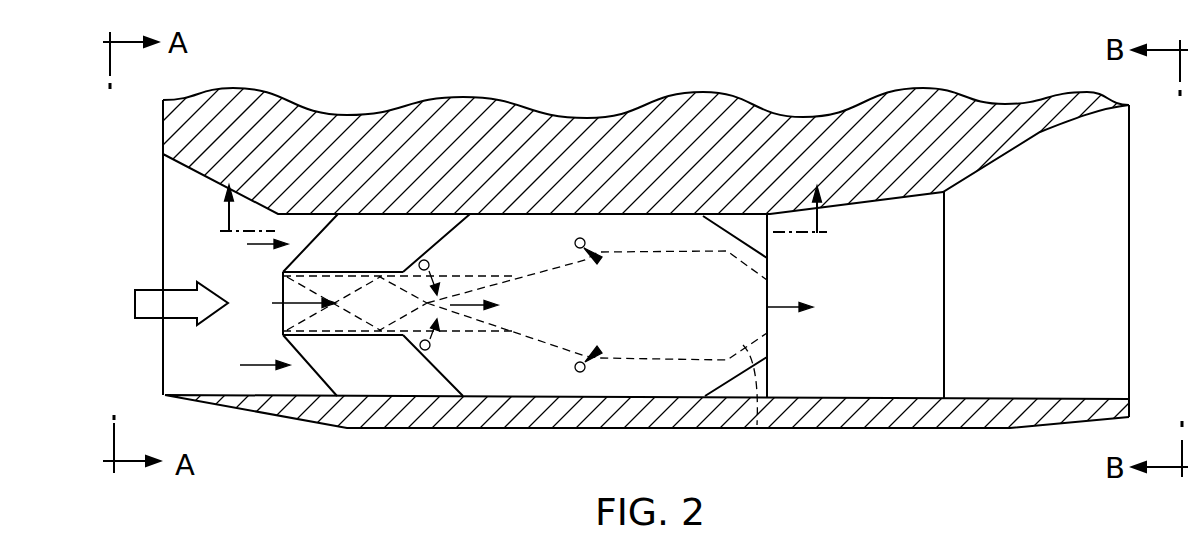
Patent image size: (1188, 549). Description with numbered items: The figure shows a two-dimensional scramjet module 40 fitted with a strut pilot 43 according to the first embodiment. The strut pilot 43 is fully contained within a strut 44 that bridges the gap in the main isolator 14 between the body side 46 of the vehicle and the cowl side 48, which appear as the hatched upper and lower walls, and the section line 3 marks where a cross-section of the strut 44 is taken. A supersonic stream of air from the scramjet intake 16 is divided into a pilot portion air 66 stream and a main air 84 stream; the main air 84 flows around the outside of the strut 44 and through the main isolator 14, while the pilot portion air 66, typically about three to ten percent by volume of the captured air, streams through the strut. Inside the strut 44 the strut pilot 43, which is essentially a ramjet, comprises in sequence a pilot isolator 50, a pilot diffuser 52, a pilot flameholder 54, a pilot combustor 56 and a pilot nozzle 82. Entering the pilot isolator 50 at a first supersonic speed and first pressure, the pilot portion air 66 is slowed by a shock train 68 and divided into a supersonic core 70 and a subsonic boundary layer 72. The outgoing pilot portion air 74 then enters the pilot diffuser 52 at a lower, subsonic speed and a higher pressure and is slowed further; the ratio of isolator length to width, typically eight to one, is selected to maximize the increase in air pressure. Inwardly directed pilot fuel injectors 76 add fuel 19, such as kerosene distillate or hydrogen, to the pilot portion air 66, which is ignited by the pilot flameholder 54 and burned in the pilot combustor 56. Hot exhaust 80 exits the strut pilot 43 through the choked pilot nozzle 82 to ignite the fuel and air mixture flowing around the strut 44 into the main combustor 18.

The section line 3- 3 is at (525, 187).
The main isolator 14 is at (740, 387).
The scramjet intake 16 is at (147, 303).
The main combustor 18 is at (870, 230).
The fuel 19 is at (591, 245).
The 2-D scramjet module 40 is at (530, 73).
The strut pilot 43 is at (525, 365).
The strut 44 is at (532, 250).
The body side 46 is at (754, 157).
The cowl side 48 is at (827, 415).
The pilot isolator 50 is at (327, 322).
The pilot diffuser 52 is at (543, 313).
The pilot flameholder 54 is at (598, 352).
The pilot combustor 56 is at (680, 302).
The pilot portion air 66 is at (275, 303).
The shock train 68 is at (377, 272).
The supersonic core 70 is at (380, 318).
The subsonic boundary layer 72 is at (443, 333).
The outgoing pilot portion air 74 is at (462, 305).
The pilot fuel injectors 76 is at (581, 238).
The hot exhaust 80 is at (775, 307).
The pilot nozzle 82 is at (759, 428).
The main air 84 is at (247, 365).